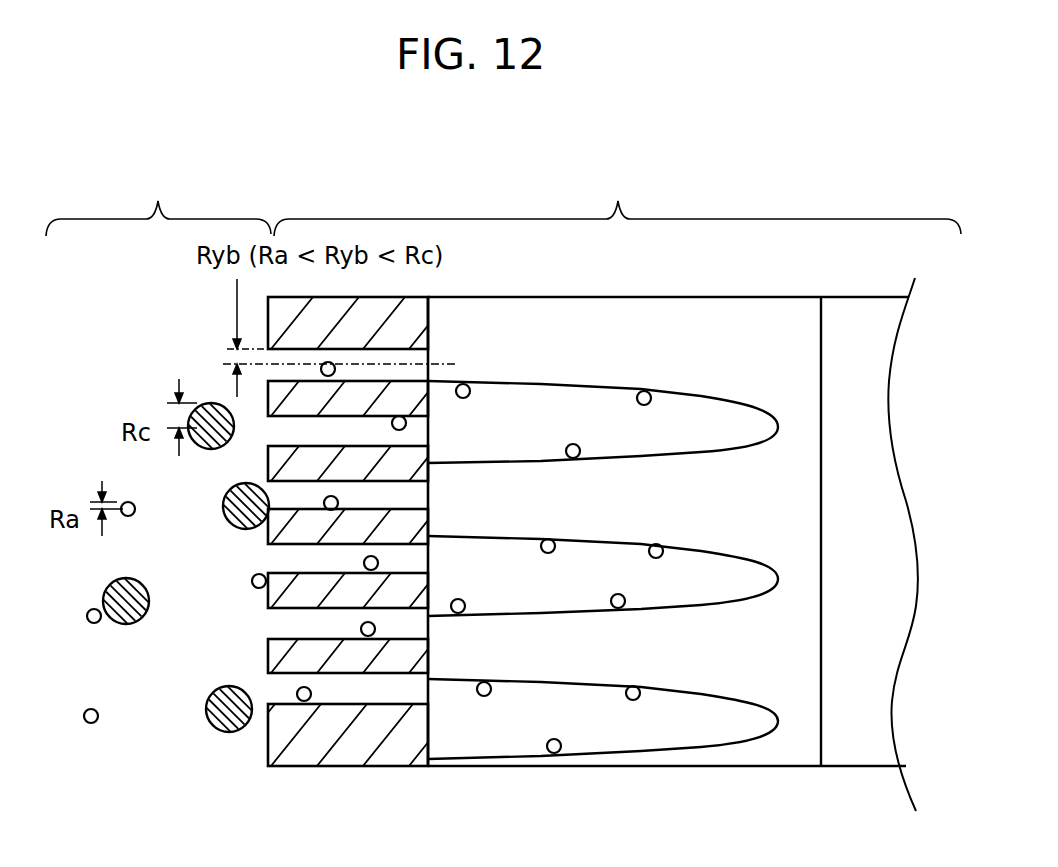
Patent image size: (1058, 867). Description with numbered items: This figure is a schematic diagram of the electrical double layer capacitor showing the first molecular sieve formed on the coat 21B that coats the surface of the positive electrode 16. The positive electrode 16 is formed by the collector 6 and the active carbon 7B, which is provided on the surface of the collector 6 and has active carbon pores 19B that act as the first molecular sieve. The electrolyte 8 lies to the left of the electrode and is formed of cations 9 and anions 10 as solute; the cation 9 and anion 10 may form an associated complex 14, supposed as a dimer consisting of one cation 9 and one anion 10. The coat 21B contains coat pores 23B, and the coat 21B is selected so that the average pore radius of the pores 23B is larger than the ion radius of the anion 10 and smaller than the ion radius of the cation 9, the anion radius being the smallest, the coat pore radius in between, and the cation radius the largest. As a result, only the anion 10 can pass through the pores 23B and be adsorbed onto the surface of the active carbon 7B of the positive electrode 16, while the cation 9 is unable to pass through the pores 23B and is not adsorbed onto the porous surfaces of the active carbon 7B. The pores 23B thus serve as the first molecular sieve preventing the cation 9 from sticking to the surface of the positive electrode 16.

The electrolyte 8 is at (158, 203).
The positive electrode 16 is at (617, 203).
The active carbon 7B is at (650, 323).
The active carbon pore 19B is at (720, 421).
The collector 6 is at (866, 326).
The associated complex 14 is at (115, 637).
The cation 9 is at (228, 732).
The anion 10 is at (634, 698).
The coat pore 23B is at (337, 688).
The coat 21B is at (392, 723).